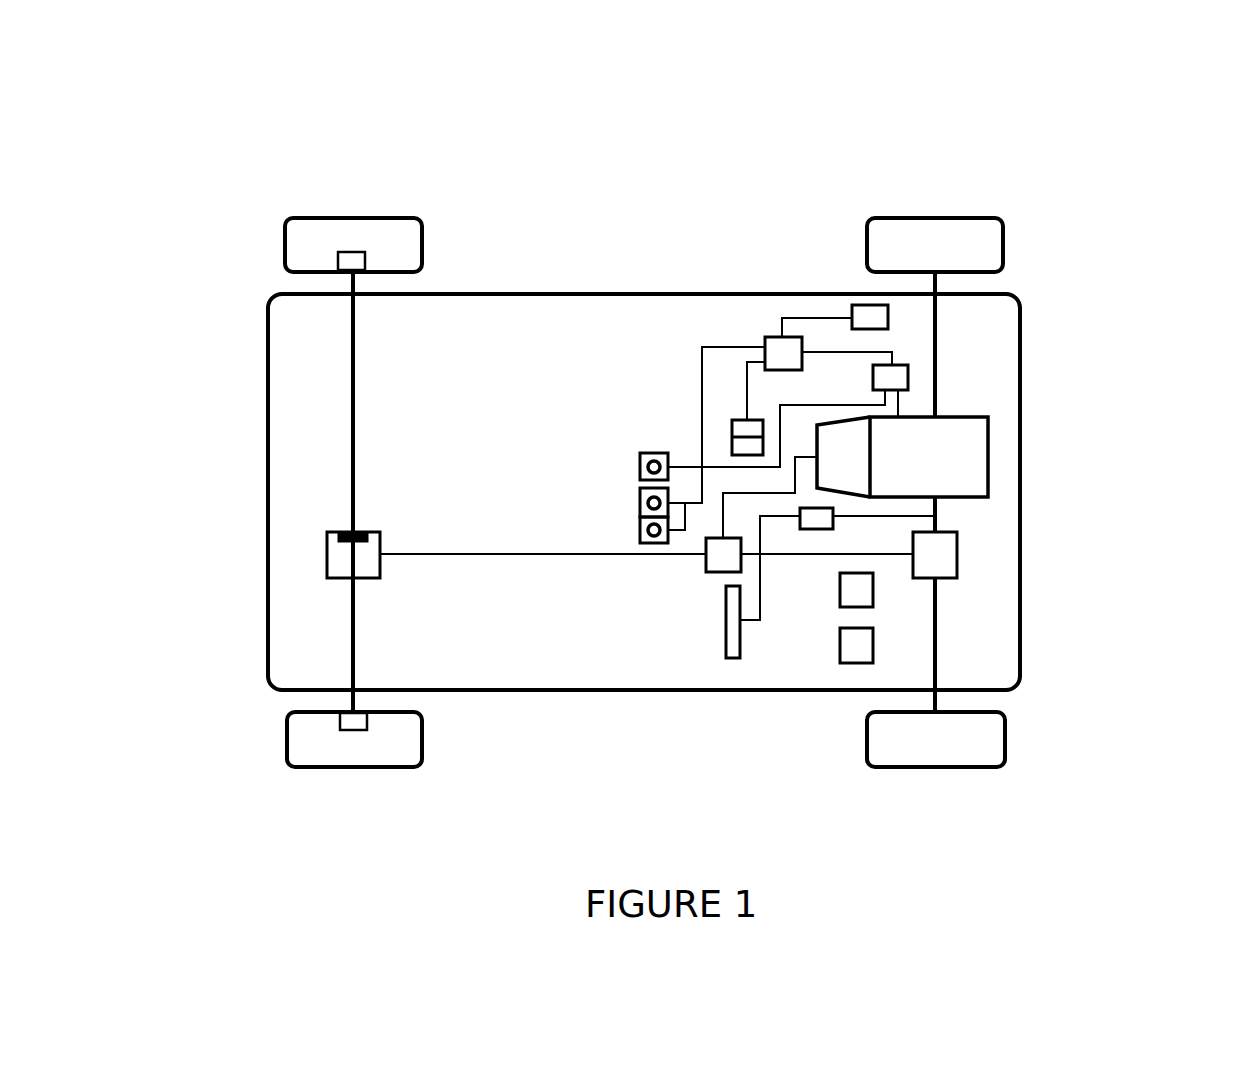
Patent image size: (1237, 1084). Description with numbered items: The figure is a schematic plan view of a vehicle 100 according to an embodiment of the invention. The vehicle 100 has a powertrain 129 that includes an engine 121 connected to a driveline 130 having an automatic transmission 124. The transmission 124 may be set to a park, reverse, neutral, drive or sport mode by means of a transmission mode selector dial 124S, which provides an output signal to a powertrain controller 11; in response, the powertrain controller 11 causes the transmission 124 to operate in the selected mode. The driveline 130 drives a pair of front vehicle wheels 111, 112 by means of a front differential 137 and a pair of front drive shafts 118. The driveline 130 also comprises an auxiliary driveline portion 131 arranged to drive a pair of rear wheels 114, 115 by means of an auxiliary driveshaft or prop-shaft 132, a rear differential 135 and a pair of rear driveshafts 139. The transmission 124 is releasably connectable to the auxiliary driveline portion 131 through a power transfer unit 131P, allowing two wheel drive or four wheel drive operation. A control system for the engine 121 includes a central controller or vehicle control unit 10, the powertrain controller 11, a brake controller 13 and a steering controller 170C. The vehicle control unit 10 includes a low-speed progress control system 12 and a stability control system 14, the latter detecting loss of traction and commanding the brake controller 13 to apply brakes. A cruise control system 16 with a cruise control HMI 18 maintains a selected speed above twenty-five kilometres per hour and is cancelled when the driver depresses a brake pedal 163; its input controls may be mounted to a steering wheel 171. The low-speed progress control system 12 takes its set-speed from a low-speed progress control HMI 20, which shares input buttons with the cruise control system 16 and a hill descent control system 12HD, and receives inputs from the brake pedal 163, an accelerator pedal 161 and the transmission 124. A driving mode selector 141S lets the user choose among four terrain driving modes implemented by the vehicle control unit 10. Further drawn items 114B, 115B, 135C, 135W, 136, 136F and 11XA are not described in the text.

The vehicle 100 is at (1153, 235).
The powertrain 129 is at (1145, 458).
The driveline 130 is at (1113, 670).
The front vehicle wheel 111 is at (983, 240).
The front vehicle wheel 112 is at (983, 750).
The rear wheel 114 is at (327, 240).
The rear wheel 115 is at (313, 745).
The front left wheel brake 114B is at (338, 258).
The rear left wheel brake 115B is at (343, 718).
The front drive shafts 118 is at (935, 335).
The rear driveshafts 139 is at (350, 362).
The front axle assembly 136 is at (338, 402).
The axle force 136F is at (942, 513).
The rear differential 135 is at (337, 578).
The steering gear clutch 135C is at (347, 532).
The steering shaft 135W is at (327, 555).
The auxiliary driveshaft or prop-shaft 132 is at (500, 556).
The auxiliary driveline portion 131 is at (539, 728).
The power transfer unit 131P is at (716, 565).
The steering wheel 171 is at (733, 653).
The steering controller 170C is at (815, 523).
The brake pedal 163 is at (840, 590).
The accelerator pedal 161 is at (857, 653).
The front differential 137 is at (947, 553).
The engine 121 is at (960, 443).
The automatic transmission 124 is at (840, 435).
The transmission mode selector dial 124S is at (640, 528).
The acceleration sensor 11XA is at (640, 503).
The driving mode selector 141S is at (640, 467).
The vehicle control unit 10 is at (756, 274).
The low-speed progress control system 12 is at (756, 274).
The stability control system 14 is at (756, 274).
The cruise control system 16 is at (756, 274).
The hill descent control system 12HD is at (777, 343).
The brake controller 13 is at (860, 315).
The powertrain controller 11 is at (900, 380).
The cruise control HMI 18 is at (697, 335).
The low-speed progress control HMI 20 is at (731, 421).